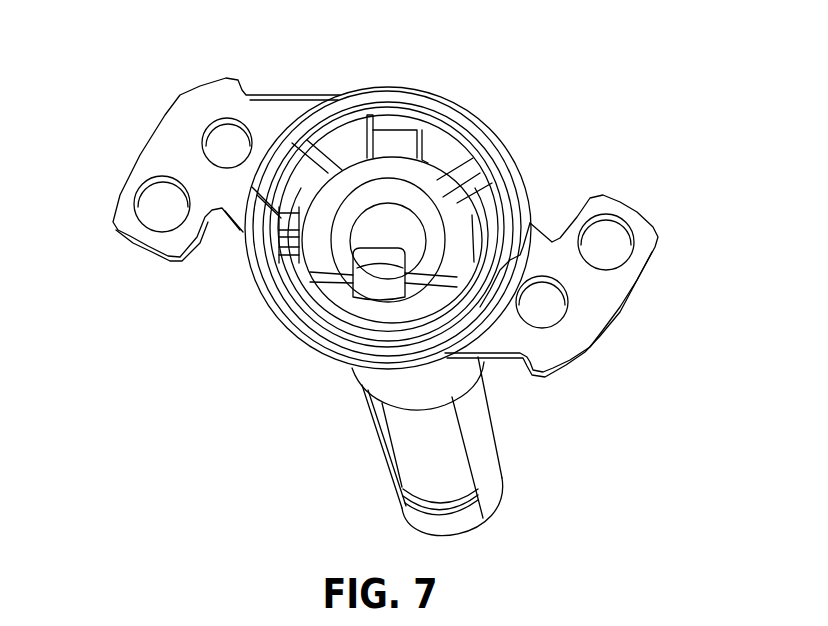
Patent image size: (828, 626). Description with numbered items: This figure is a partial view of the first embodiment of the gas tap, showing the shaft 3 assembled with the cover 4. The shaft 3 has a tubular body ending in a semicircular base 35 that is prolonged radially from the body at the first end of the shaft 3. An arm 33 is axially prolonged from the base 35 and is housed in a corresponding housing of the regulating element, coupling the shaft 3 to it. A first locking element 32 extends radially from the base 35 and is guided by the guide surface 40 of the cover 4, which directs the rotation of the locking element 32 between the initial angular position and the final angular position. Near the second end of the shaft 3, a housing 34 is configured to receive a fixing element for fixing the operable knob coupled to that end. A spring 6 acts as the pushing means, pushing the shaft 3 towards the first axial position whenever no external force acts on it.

The shaft 3 is at (417, 437).
The cover 4 is at (393, 385).
The spring 6 is at (367, 320).
The first locking element 32 is at (385, 140).
The arm 33 is at (380, 277).
The housing 34 is at (420, 502).
The semicircular base 35 is at (452, 203).
The guide surface 40 is at (450, 160).